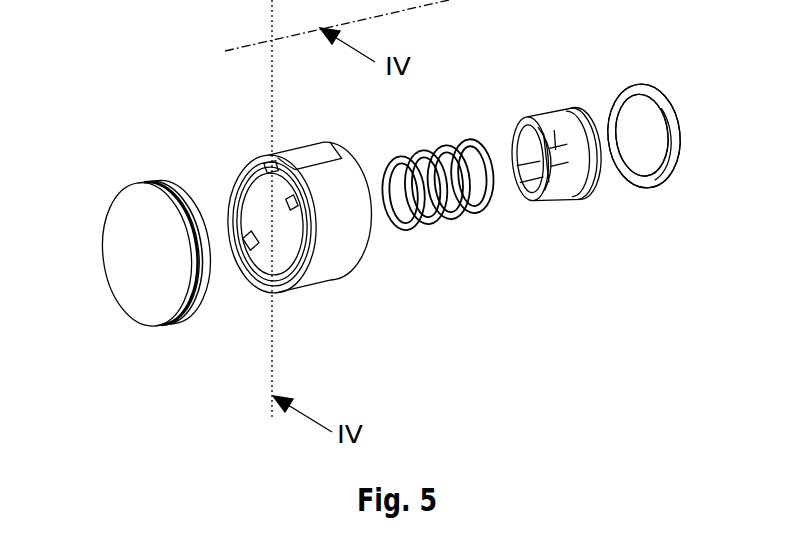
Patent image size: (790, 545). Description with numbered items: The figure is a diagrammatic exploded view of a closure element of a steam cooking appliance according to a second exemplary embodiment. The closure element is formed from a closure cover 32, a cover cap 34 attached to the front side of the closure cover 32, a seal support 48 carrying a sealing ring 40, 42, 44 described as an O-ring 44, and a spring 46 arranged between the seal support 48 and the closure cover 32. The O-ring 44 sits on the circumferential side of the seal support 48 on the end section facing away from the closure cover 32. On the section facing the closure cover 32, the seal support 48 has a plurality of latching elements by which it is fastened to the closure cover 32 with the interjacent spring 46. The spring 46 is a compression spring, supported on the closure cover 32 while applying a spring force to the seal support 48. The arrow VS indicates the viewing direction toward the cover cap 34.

The closure cover 32 is at (255, 180).
The cover cap 34 is at (152, 196).
The sealing ring 40 is at (633, 90).
The sealing ring 42 is at (644, 136).
The O-ring 44 is at (642, 135).
The spring 46 is at (436, 150).
The seal support 48 is at (540, 200).
The viewing direction VS is at (114, 320).